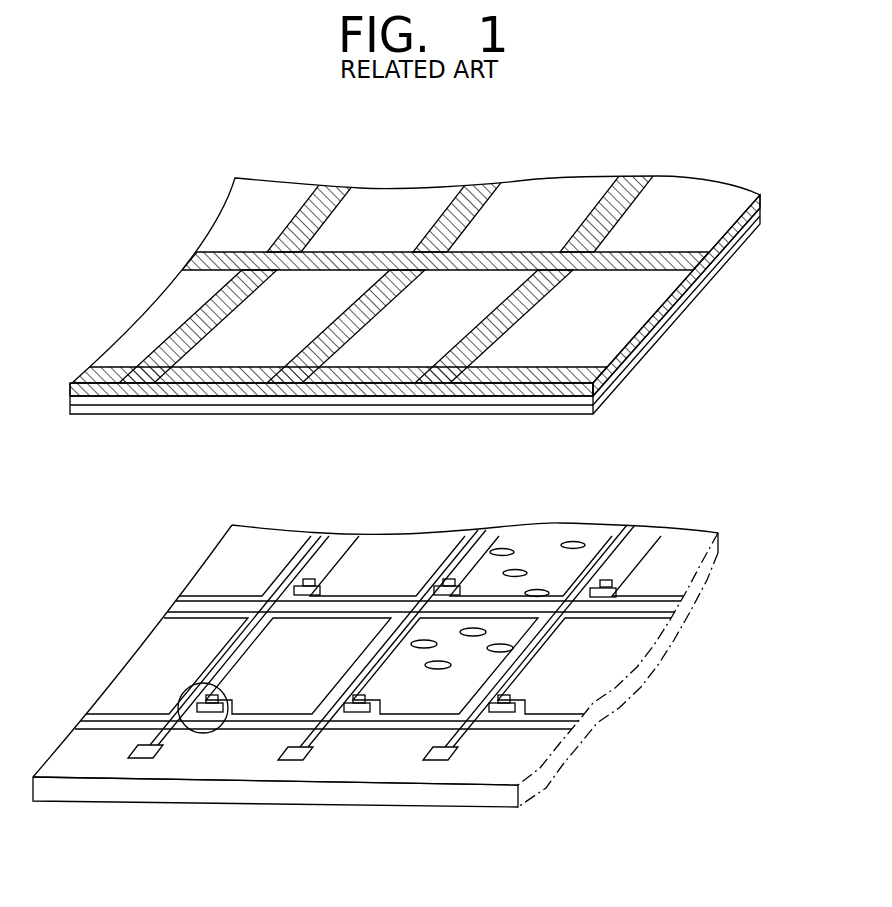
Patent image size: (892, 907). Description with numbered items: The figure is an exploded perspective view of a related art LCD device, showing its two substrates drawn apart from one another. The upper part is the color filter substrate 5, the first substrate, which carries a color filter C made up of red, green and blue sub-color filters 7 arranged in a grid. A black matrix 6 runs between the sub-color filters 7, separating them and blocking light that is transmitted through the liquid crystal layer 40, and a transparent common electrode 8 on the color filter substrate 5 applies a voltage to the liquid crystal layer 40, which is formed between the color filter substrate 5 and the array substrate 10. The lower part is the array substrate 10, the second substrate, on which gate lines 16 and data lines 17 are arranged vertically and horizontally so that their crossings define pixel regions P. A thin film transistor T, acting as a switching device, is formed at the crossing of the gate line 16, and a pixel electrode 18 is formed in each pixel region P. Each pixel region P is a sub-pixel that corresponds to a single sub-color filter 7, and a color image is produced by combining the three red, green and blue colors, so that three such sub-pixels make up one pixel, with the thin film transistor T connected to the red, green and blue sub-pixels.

The color filter C is at (146, 276).
The color filter substrate 5 is at (572, 403).
The black matrix 6 is at (605, 386).
The sub-color filters 7 is at (638, 306).
The transparent common electrode 8 is at (555, 410).
The pixel region P is at (570, 672).
The array substrate 10 is at (367, 795).
The gate lines 16 is at (418, 727).
The data lines 17 is at (313, 742).
The pixel electrode 18 is at (503, 693).
The liquid crystal layer 40 is at (510, 572).
The thin film transistor T is at (204, 747).